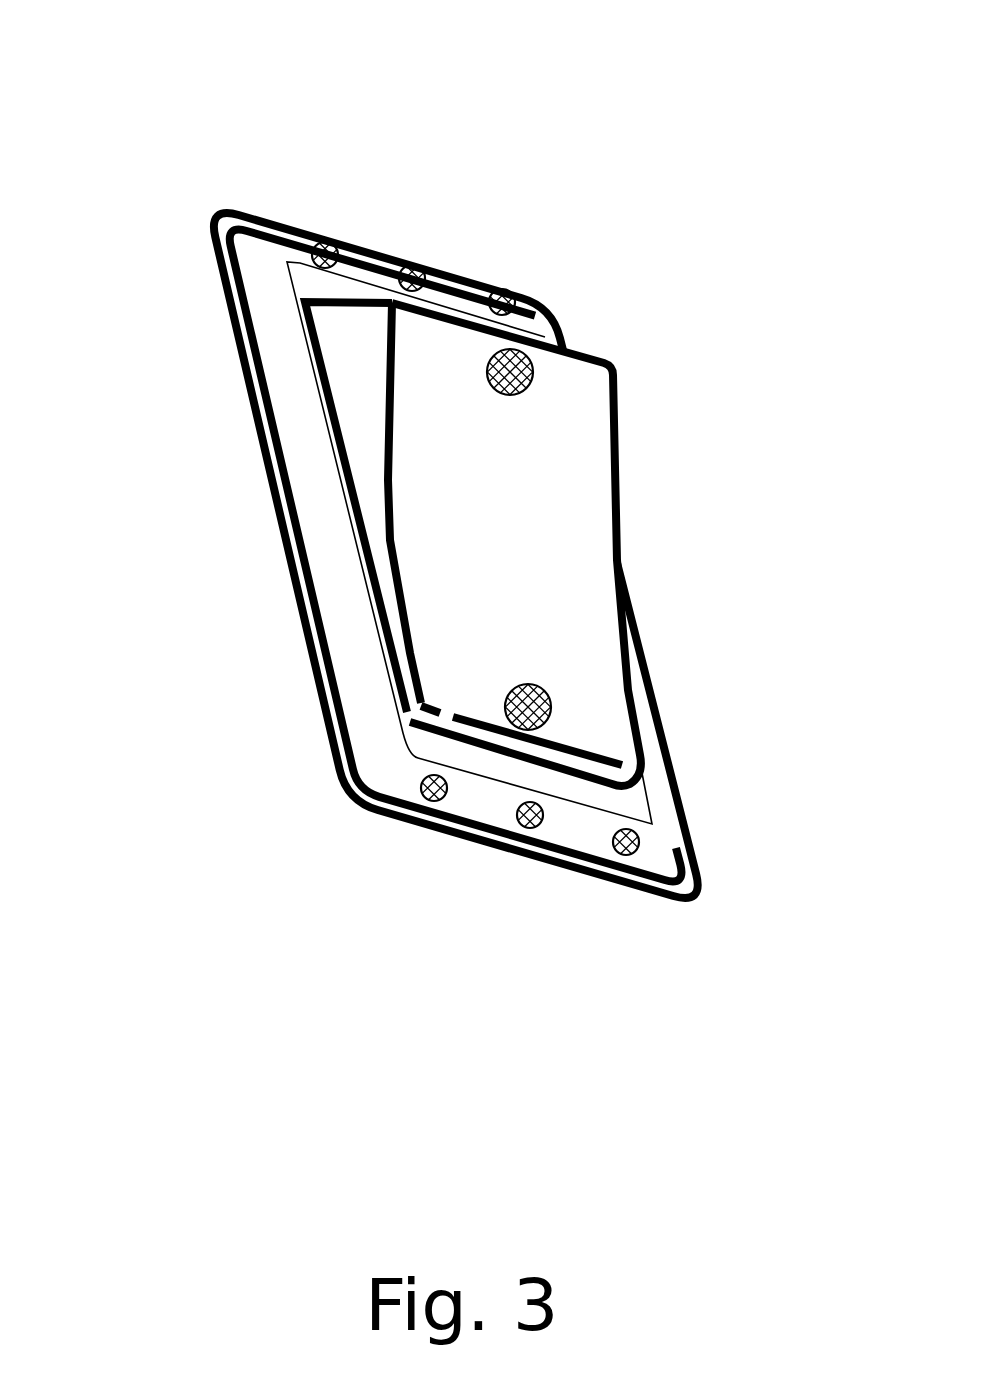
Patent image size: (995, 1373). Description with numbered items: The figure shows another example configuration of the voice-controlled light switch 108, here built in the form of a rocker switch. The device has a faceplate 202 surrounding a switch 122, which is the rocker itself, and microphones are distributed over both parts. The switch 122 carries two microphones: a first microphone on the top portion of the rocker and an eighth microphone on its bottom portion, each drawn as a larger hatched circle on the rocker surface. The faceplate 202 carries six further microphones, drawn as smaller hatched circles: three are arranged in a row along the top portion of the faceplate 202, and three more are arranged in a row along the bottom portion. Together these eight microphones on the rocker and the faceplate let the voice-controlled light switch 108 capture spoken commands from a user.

The voice-controlled light switch 108 is at (450, 454).
The faceplate 202 is at (263, 243).
The switch 122 is at (377, 450).